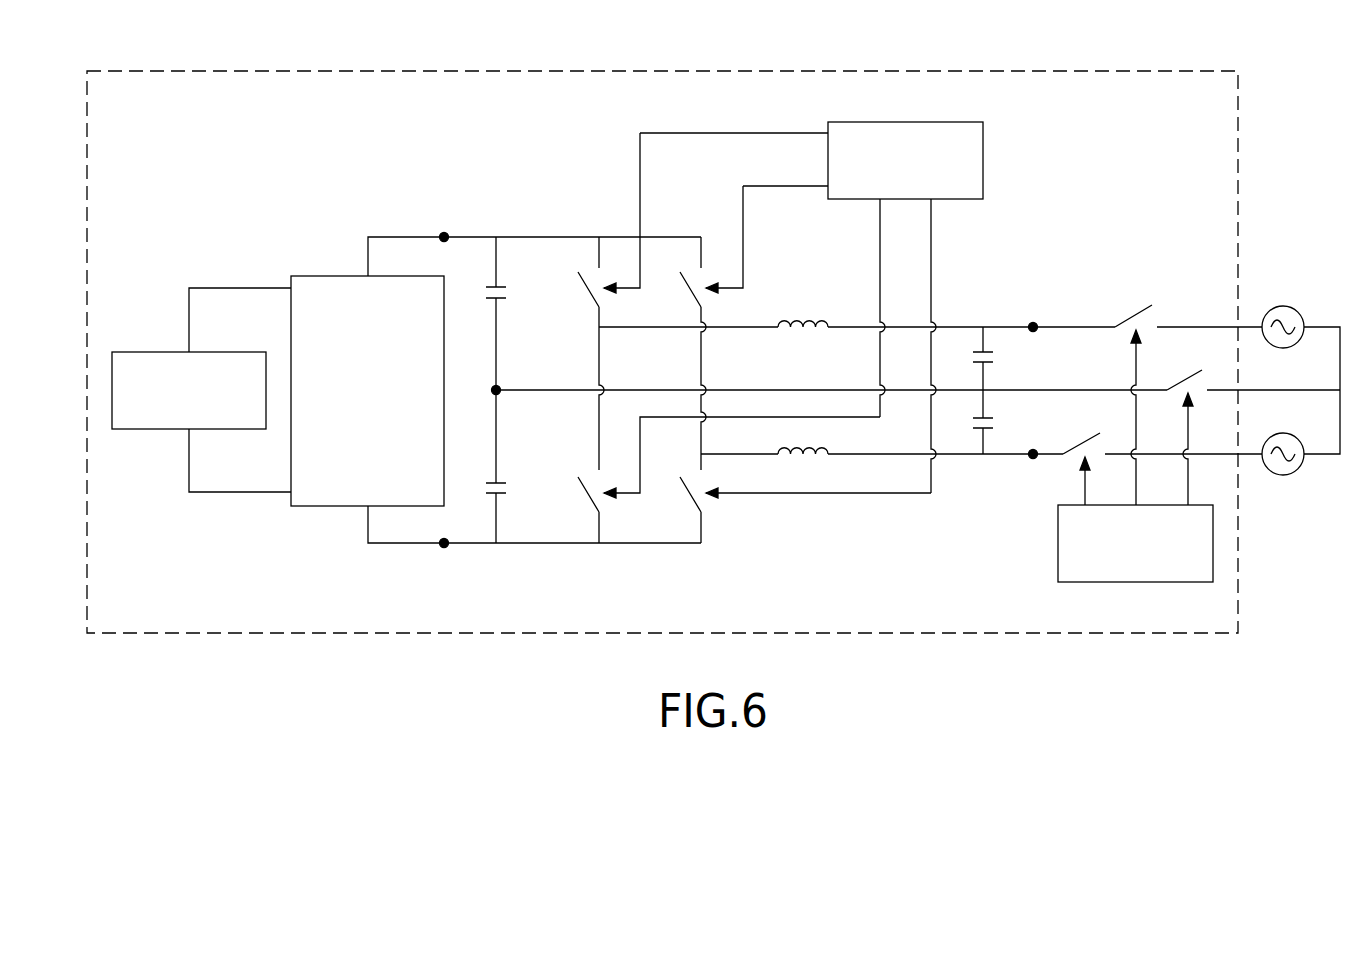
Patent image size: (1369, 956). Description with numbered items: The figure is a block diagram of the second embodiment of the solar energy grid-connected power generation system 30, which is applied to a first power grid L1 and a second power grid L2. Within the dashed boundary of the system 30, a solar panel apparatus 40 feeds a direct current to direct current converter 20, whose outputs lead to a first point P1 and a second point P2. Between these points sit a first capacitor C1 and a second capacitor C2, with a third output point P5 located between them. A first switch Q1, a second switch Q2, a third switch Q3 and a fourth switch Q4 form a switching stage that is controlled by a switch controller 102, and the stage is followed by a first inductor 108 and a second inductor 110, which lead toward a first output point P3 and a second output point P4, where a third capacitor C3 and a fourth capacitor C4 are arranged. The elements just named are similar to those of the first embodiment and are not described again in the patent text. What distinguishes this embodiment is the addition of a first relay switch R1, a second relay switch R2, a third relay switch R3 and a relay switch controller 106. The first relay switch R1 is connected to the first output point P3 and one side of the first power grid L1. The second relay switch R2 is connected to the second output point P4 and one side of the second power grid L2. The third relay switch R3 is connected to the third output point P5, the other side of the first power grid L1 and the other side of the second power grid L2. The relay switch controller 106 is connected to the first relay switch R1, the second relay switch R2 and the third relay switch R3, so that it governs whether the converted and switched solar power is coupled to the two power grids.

The direct current to direct current converter 20 is at (358, 280).
The solar energy grid-connected power generation system 30 is at (662, 78).
The solar panel apparatus 40 is at (178, 358).
The switch controller 102 is at (905, 122).
The relay switch controller 106 is at (1137, 582).
The first inductor 108 is at (822, 313).
The second inductor 110 is at (812, 441).
The first point P1 is at (460, 226).
The second point P2 is at (460, 532).
The first output point P3 is at (1033, 315).
The second output point P4 is at (1033, 469).
The third output point P5 is at (511, 379).
The first capacitor C1 is at (512, 290).
The second capacitor C2 is at (512, 487).
The third capacitor C3 is at (999, 358).
The fourth capacitor C4 is at (999, 425).
The first switch Q1 is at (597, 230).
The second switch Q2 is at (699, 255).
The third switch Q3 is at (717, 480).
The fourth switch Q4 is at (793, 510).
The first relay switch R1 is at (1182, 398).
The second relay switch R2 is at (1156, 463).
The third relay switch R3 is at (1246, 431).
The first power grid L1 is at (1283, 316).
The second power grid L2 is at (1283, 469).